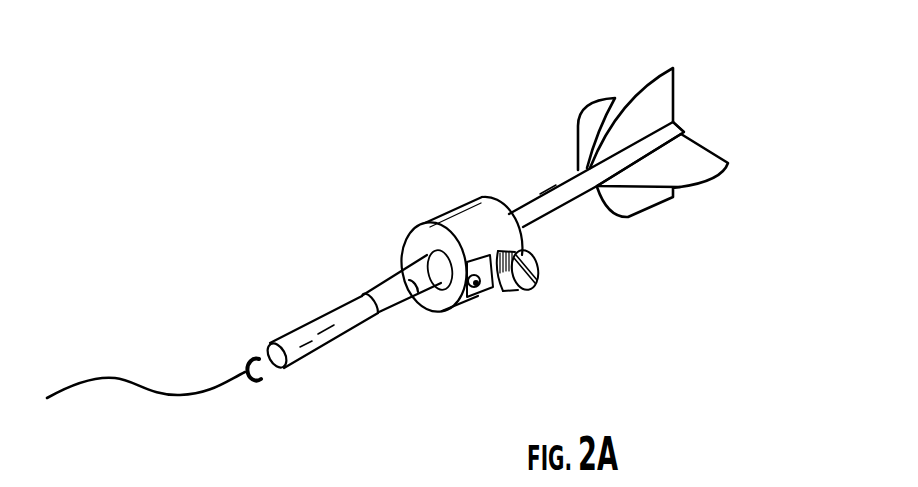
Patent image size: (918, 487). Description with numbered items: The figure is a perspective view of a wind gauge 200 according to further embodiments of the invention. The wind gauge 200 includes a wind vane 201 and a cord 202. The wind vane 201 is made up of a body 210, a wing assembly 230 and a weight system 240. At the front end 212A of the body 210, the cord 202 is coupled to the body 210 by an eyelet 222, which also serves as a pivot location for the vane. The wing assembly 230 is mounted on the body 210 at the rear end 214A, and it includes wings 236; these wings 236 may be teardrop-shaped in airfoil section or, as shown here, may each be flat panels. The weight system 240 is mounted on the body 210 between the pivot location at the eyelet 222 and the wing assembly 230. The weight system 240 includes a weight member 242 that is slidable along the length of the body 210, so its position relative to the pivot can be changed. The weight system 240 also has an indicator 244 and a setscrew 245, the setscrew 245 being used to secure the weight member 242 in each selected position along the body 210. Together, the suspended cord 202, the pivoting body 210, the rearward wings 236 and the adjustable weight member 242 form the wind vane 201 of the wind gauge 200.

The wind gauge 200 is at (515, 62).
The wind vane 201 is at (587, 267).
The cord 202 is at (110, 378).
The body 210 is at (350, 297).
The front end 212A is at (265, 342).
The rear end 214A is at (680, 122).
The eyelet 222 is at (257, 380).
The wing assembly 230 is at (687, 220).
The wings 236 is at (665, 82).
The weight system 240 is at (483, 332).
The weight member 242 is at (459, 210).
The indicator 244 is at (438, 290).
The setscrew 245 is at (533, 283).